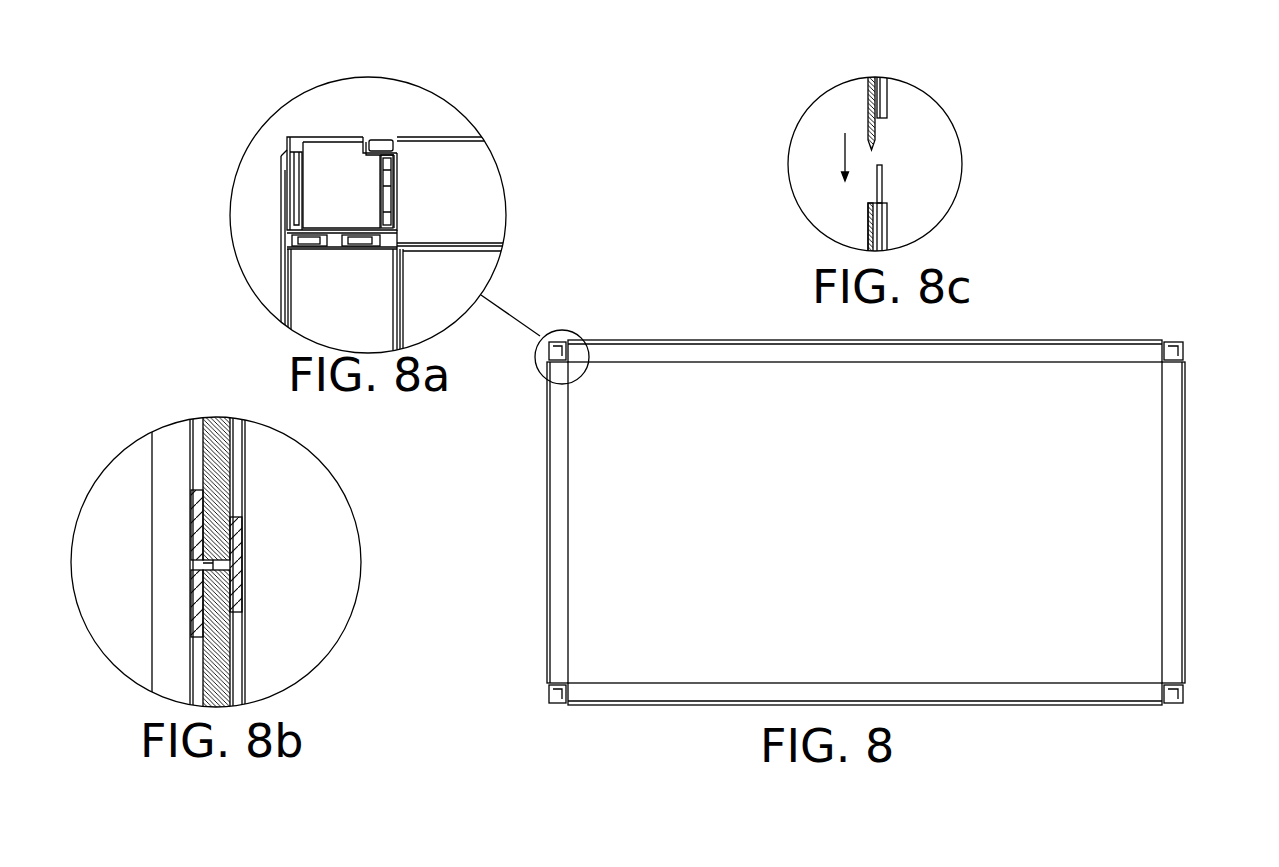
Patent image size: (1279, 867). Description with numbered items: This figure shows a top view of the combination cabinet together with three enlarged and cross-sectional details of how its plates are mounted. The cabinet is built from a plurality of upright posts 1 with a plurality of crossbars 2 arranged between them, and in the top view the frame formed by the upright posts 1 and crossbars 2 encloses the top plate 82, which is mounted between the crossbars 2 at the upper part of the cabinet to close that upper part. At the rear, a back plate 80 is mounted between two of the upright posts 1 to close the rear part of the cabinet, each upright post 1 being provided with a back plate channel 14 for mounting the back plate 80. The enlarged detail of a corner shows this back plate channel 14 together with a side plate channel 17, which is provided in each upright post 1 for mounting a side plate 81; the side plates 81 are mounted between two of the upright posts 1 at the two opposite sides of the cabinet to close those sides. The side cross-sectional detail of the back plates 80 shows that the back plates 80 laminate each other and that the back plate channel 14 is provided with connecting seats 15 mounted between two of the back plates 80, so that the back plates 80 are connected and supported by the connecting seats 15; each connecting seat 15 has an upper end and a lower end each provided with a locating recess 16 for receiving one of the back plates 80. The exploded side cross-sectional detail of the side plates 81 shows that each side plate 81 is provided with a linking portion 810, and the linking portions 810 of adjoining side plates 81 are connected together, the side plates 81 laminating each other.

In FIG. 8, the upright post 1 is at (549, 692).
In FIG. 8A, the upright post 1 is at (340, 158).
In FIG. 8B, the upright post 1 is at (168, 483).
In FIG. 8, the crossbar 2 is at (562, 544).
In FIG. 8A, the crossbar 2 is at (453, 170).
In FIG. 8A, the back plate channel 14 is at (366, 143).
In FIG. 8B, the back plate channel 14 is at (197, 452).
In FIG. 8B, the connecting seat 15 is at (235, 562).
In FIG. 8B, the locating recess 16 is at (203, 538).
In FIG. 8A, the side plate channel 17 is at (295, 197).
In FIG. 8A, the back plate 80 is at (385, 145).
In FIG. 8B, the back plate 80 is at (215, 470).
In FIG. 8, the side plate 81 is at (547, 496).
In FIG. 8A, the side plate 81 is at (283, 248).
In FIG. 8C, the side plate 81 is at (877, 97).
In FIG. 8, the top plate 82 is at (746, 377).
In FIG. 8A, the top plate 82 is at (450, 270).
In FIG. 8C, the linking portion 810 is at (872, 140).